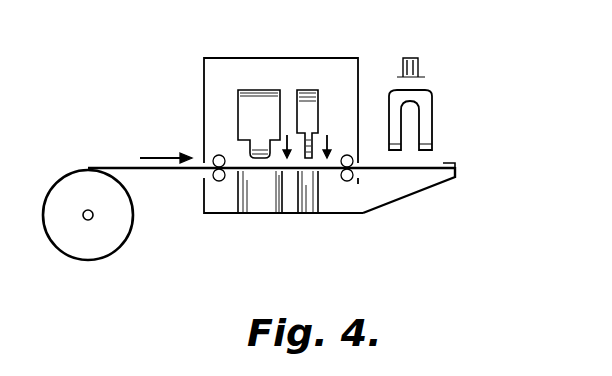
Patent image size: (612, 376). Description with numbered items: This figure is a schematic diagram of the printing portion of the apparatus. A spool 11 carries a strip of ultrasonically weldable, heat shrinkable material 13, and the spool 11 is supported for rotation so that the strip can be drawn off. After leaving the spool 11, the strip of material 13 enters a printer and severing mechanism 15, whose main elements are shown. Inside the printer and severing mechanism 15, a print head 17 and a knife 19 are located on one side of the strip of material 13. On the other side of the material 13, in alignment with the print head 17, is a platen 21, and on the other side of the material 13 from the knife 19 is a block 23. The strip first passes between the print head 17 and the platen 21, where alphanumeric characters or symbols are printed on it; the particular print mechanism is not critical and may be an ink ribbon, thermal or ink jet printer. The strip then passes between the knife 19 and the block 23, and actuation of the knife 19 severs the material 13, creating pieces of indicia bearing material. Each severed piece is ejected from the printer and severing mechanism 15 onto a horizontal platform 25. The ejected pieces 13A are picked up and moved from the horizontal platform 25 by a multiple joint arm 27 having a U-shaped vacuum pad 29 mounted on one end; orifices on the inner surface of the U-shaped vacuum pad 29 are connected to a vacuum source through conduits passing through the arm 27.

The spool 11 is at (95, 252).
The ultrasonically weldable, heat shrinkable material 13 is at (163, 172).
The ejected pieces 13A is at (437, 168).
The printer and severing mechanism 15 is at (285, 58).
The print head 17 is at (250, 108).
The knife 19 is at (310, 100).
The platen 21 is at (255, 205).
The block 23 is at (309, 205).
The horizontal platform 25 is at (415, 170).
The multiple joint arm 27 is at (419, 66).
The U-shaped vacuum pad 29 is at (433, 115).